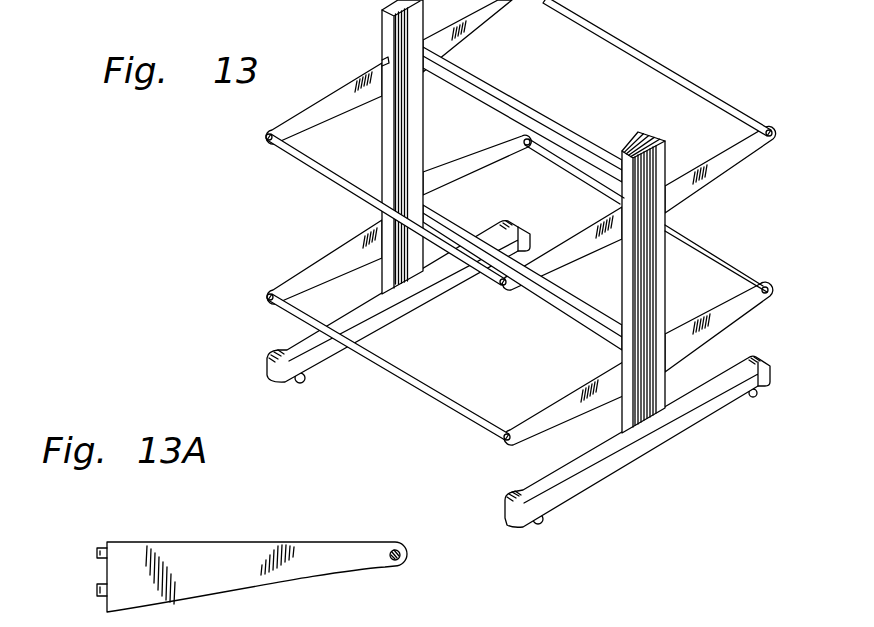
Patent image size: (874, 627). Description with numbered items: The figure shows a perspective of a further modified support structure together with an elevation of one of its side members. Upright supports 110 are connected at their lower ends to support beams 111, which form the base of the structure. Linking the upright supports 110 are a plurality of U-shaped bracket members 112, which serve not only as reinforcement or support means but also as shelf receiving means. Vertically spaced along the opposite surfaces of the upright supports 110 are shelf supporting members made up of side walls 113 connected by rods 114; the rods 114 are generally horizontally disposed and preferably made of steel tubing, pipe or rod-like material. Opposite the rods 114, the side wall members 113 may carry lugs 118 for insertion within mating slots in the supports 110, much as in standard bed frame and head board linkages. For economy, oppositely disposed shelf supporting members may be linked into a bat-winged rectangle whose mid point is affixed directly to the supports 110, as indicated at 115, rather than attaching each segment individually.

In FIG. 13, the upright support 110 is at (641, 132).
In FIG. 13, the support beam 111 is at (759, 365).
In FIG. 13, the U-shaped bracket member 112 is at (488, 75).
In FIG. 13, the side wall 113 is at (713, 173).
In FIG. 13A, the side wall 113 is at (242, 555).
In FIG. 13, the rod 114 is at (652, 60).
In FIG. 13A, the rod 114 is at (397, 540).
In FIG. 13, the linkage 115 is at (383, 62).
In FIG. 13A, the lug 118 is at (97, 595).